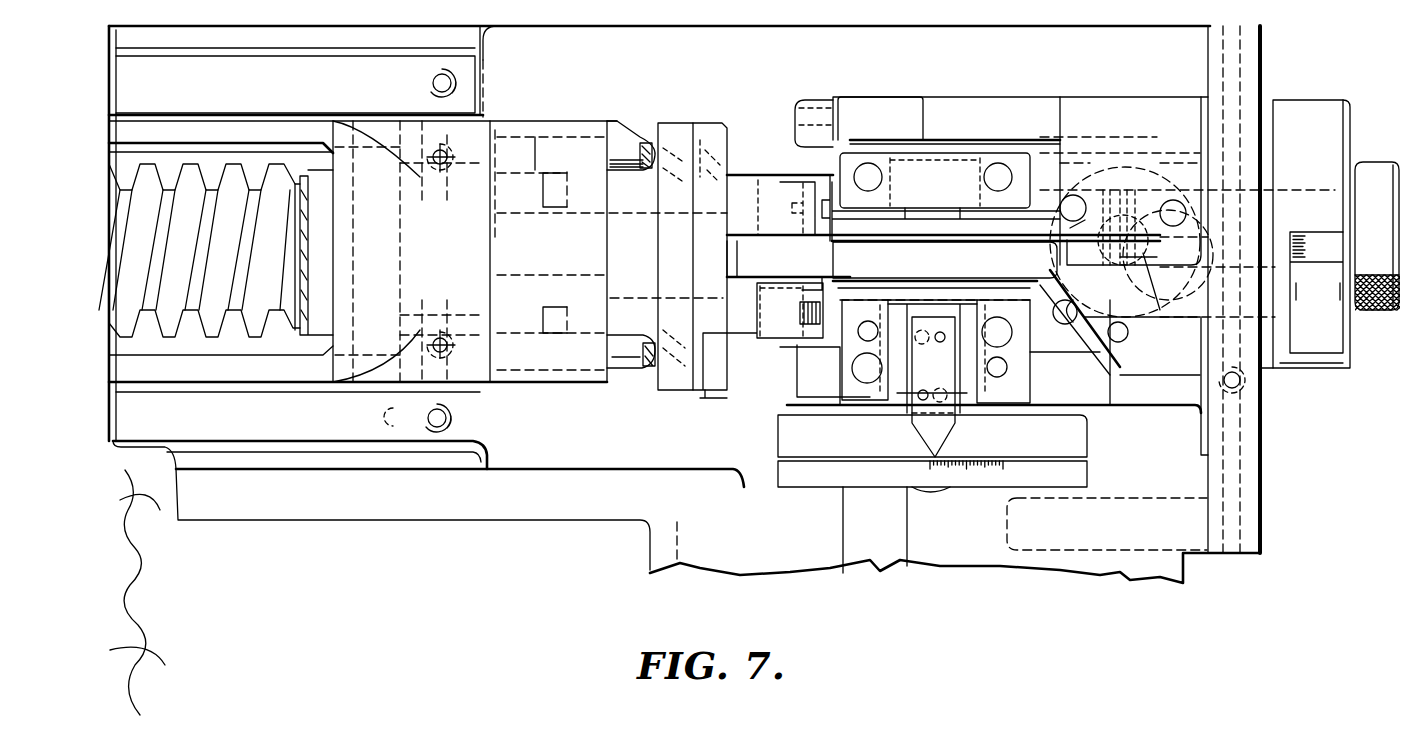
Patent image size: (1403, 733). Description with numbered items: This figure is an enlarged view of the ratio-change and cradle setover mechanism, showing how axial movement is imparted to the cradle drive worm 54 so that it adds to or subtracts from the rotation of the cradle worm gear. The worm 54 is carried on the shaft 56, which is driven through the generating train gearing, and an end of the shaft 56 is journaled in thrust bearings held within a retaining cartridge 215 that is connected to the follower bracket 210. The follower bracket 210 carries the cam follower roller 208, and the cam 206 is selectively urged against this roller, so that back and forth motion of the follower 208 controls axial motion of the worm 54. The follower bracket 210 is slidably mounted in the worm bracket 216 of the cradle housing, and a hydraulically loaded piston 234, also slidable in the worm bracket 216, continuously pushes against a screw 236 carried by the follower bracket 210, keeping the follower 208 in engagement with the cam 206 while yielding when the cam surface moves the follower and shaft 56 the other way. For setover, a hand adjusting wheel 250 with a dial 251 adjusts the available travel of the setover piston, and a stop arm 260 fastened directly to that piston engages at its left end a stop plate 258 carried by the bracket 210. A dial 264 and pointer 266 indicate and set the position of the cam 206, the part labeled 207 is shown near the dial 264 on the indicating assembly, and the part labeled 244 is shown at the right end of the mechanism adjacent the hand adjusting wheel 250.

The cradle drive worm 54 is at (220, 330).
The shaft 56 is at (313, 330).
The cam 206 is at (960, 276).
The indicator scale 207 is at (1090, 440).
The cam follower roller 208 is at (747, 258).
The follower bracket 210 is at (708, 125).
The retaining cartridge 215 is at (692, 121).
The worm bracket 216 is at (622, 100).
The piston 234 is at (630, 140).
The screw 236 is at (737, 118).
The collar 244 is at (1328, 370).
The hand adjusting wheel 250 is at (1378, 312).
The dial 251 is at (1303, 228).
The stop plate 258 is at (825, 182).
The stop arm 260 is at (953, 193).
The dial 264 is at (985, 457).
The pointer 266 is at (927, 437).